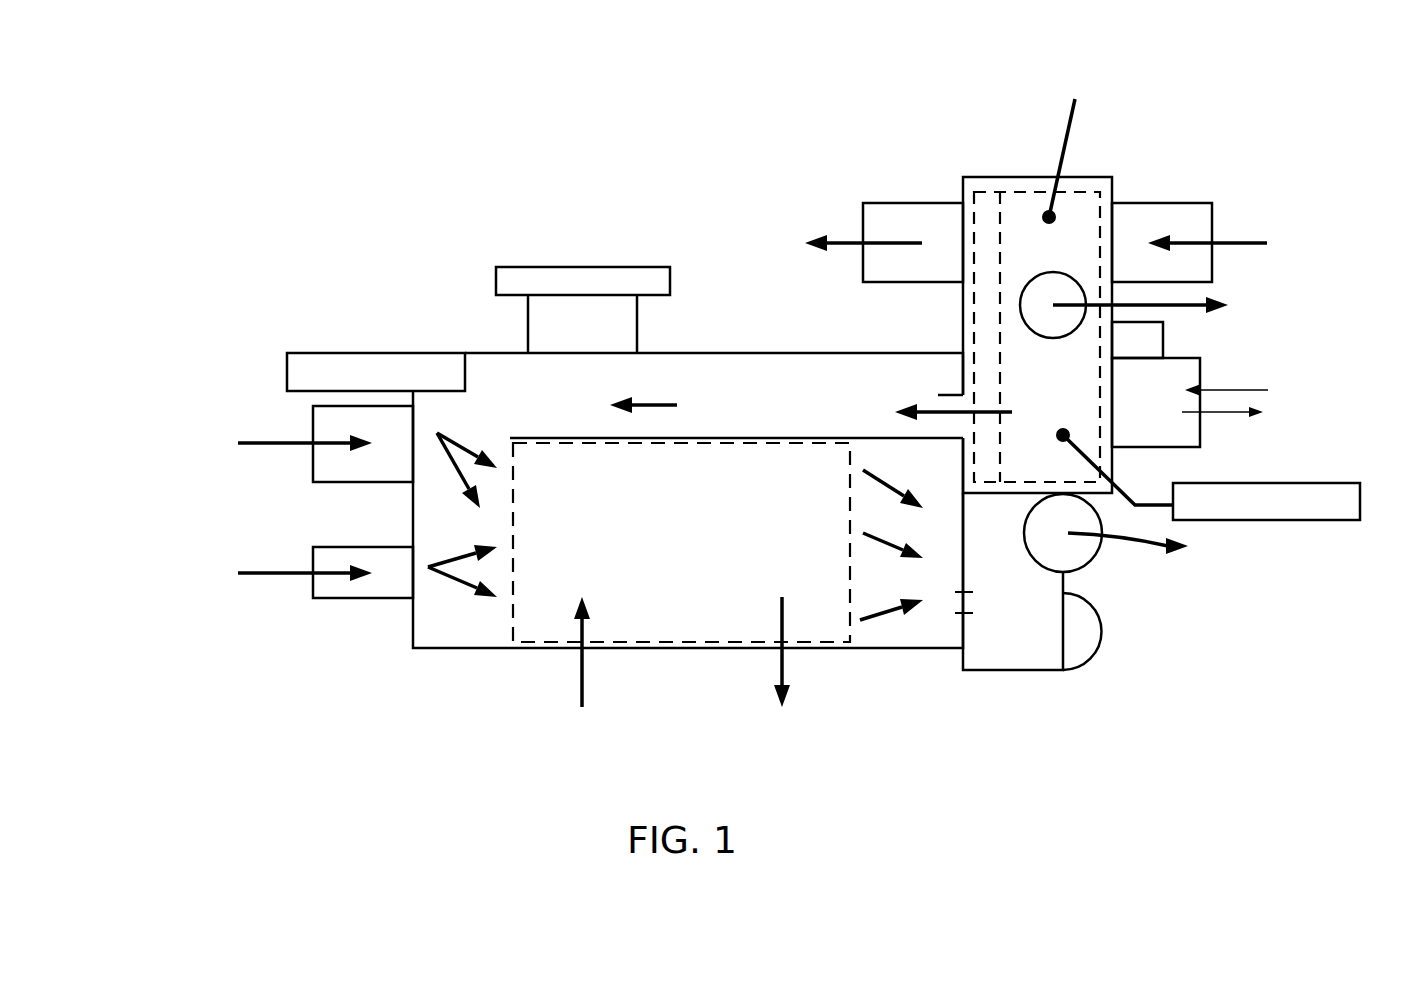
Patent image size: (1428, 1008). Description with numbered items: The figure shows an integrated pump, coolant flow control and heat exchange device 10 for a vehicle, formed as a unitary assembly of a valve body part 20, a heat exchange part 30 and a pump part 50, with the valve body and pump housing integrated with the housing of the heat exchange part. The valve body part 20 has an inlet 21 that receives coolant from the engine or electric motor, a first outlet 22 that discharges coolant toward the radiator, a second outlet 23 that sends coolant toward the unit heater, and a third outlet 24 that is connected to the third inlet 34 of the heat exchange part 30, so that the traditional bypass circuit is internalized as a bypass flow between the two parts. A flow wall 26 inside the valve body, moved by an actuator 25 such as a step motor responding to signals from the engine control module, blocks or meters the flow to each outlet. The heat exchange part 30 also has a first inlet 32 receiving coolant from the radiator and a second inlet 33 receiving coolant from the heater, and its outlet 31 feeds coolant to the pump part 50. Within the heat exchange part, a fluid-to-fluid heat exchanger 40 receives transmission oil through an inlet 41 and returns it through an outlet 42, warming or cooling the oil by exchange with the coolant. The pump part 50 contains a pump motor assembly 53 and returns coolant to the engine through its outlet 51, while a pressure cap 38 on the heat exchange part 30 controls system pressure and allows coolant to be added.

The integrated pump, coolant flow control and heat exchange device 10 is at (308, 280).
The valve body part 20 is at (988, 177).
The inlet 21 is at (1165, 203).
The first outlet 22 is at (907, 203).
The second outlet 23 is at (1068, 272).
The third outlet 24 is at (952, 393).
The actuator 25 is at (1200, 447).
The flow wall 26 is at (1077, 100).
The heat exchange part 30 is at (878, 655).
The outlet 31 is at (963, 598).
The first inlet 32 is at (313, 420).
The second inlet 33 is at (313, 558).
The third inlet 34 is at (761, 417).
The pressure cap 38 is at (582, 265).
The heat exchanger 40 is at (510, 623).
The inlet 41 is at (585, 648).
The outlet 42 is at (787, 648).
The pump part 50 is at (1018, 657).
The outlet 51 is at (1137, 548).
The pump motor assembly 53 is at (1090, 633).